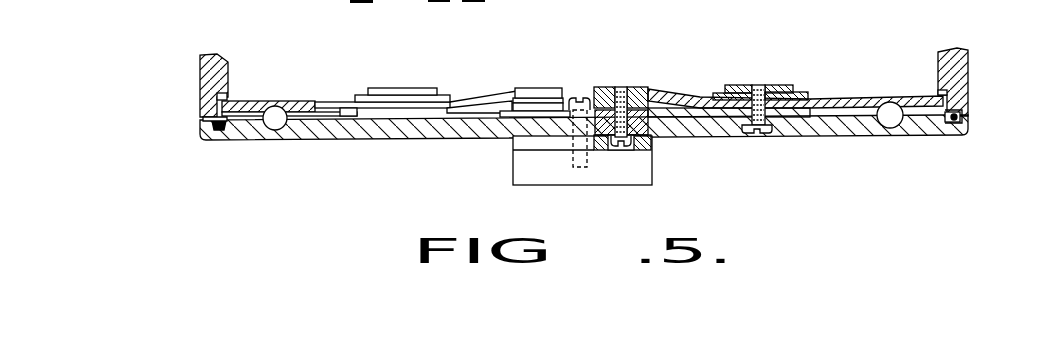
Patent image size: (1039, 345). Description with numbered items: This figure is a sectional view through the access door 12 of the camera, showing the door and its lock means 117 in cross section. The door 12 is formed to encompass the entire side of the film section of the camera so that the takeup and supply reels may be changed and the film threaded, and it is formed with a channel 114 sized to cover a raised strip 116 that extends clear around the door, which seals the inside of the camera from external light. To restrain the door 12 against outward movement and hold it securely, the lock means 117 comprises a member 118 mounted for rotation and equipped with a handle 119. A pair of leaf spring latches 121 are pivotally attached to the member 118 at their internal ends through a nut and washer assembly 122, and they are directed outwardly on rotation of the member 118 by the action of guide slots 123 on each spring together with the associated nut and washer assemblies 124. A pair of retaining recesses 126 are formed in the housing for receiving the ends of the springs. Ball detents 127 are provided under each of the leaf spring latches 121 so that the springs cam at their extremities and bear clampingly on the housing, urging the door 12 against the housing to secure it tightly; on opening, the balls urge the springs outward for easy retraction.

The door 12 is at (905, 37).
The channel 114 is at (225, 130).
The raised strip 116 is at (202, 135).
The lock means 117 is at (778, 86).
The member 118 is at (652, 142).
The handle 119 is at (513, 173).
The leaf spring latches 121 is at (340, 78).
The nut and washer assembly 122 is at (598, 87).
The guide slots 123 is at (810, 98).
The nut and washer assemblies 124 is at (384, 90).
The retaining recesses 126 is at (217, 97).
The ball detents 127 is at (276, 121).